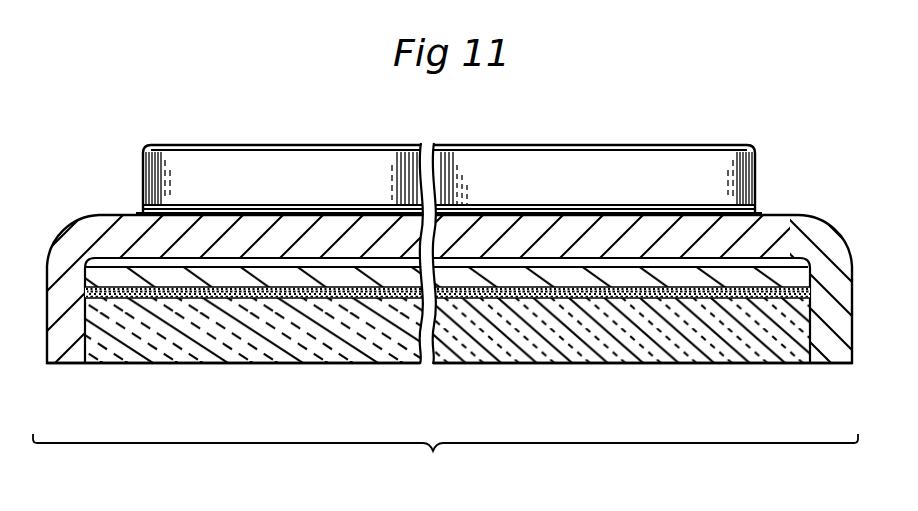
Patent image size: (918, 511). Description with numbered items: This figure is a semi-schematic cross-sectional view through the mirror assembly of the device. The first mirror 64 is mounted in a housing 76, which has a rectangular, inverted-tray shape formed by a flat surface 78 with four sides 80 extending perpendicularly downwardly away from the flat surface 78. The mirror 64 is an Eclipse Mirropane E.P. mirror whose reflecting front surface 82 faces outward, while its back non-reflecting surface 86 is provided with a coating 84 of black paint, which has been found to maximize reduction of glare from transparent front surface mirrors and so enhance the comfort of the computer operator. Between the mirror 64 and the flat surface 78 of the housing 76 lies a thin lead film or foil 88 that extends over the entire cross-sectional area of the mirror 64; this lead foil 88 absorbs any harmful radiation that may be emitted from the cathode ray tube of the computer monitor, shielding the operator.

The first mirror 64 is at (183, 310).
The housing 76 is at (244, 213).
The flat surface 78 is at (337, 212).
The sides 80 is at (46, 262).
The reflecting front surface 82 is at (542, 364).
The coating 84 is at (632, 293).
The back non-reflecting surface 86 is at (722, 296).
The lead foil 88 is at (563, 272).